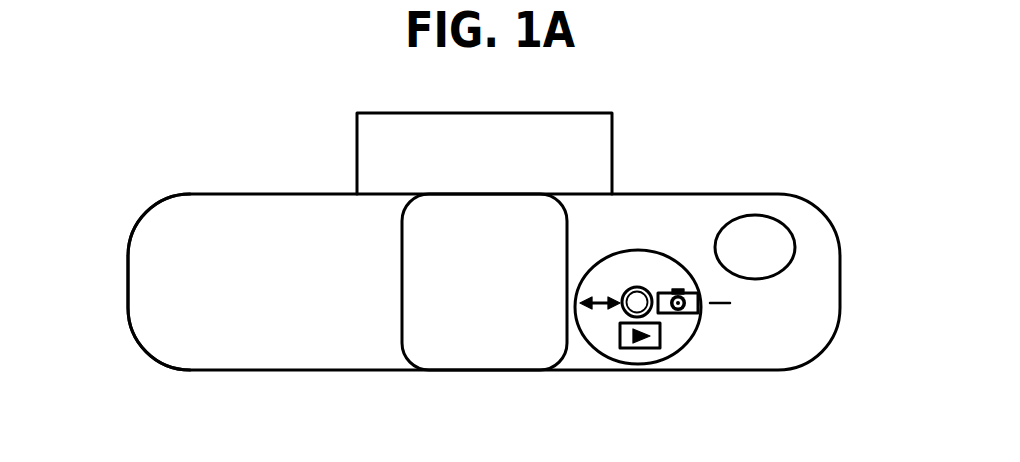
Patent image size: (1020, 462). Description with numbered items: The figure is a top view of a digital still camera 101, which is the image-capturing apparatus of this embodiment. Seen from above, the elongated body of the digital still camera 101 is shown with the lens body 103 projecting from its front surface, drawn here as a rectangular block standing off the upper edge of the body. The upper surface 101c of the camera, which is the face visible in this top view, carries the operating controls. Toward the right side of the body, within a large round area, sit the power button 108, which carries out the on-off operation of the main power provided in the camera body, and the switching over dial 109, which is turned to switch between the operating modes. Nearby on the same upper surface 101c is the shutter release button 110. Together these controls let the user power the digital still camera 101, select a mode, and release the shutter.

The digital still camera 101 is at (860, 257).
The upper surface 101c is at (138, 283).
The lens body 103 is at (612, 150).
The power button 108 is at (625, 313).
The switching over dial 109 is at (692, 343).
The shutter release button 110 is at (770, 219).